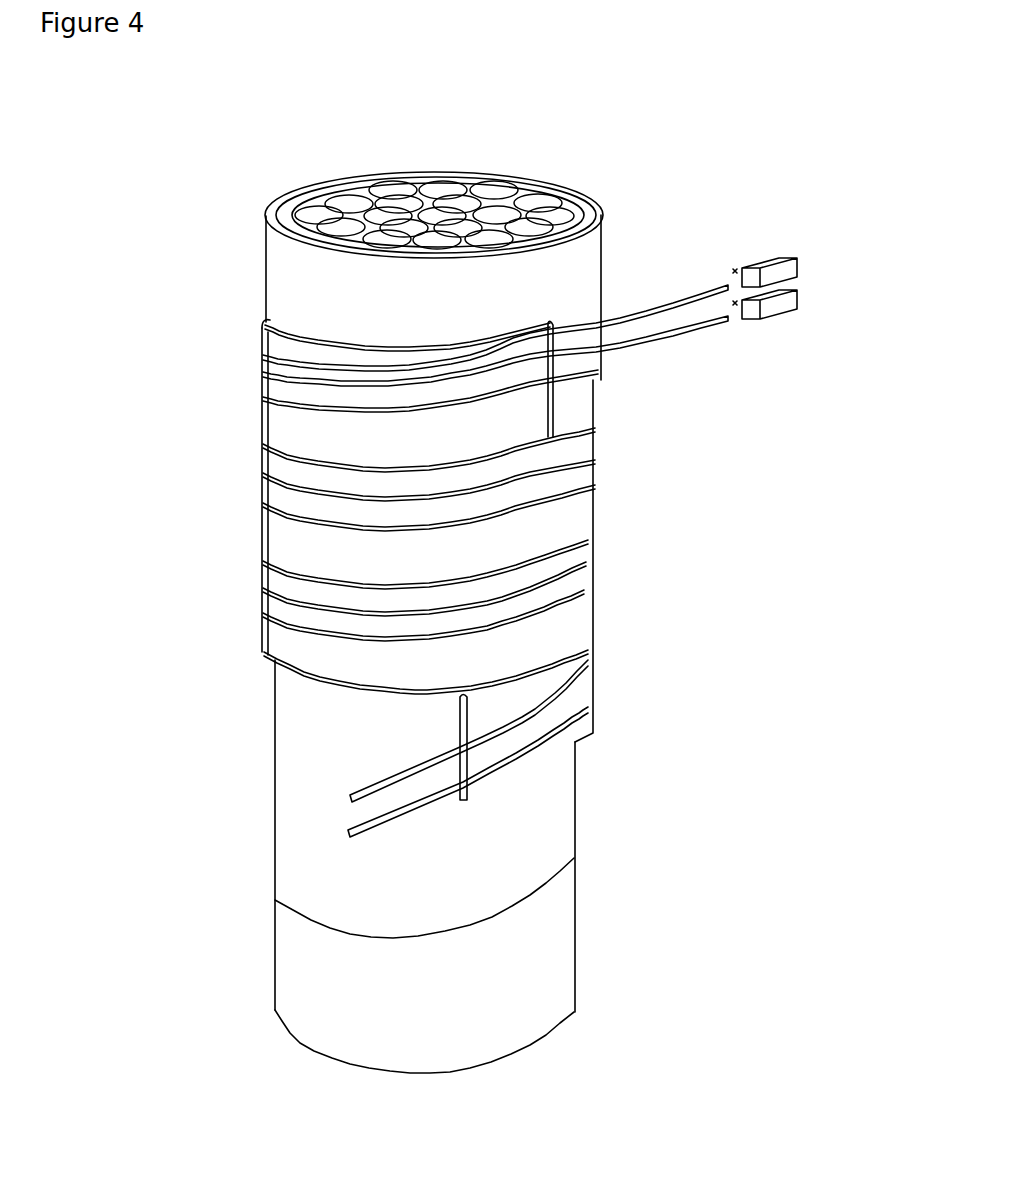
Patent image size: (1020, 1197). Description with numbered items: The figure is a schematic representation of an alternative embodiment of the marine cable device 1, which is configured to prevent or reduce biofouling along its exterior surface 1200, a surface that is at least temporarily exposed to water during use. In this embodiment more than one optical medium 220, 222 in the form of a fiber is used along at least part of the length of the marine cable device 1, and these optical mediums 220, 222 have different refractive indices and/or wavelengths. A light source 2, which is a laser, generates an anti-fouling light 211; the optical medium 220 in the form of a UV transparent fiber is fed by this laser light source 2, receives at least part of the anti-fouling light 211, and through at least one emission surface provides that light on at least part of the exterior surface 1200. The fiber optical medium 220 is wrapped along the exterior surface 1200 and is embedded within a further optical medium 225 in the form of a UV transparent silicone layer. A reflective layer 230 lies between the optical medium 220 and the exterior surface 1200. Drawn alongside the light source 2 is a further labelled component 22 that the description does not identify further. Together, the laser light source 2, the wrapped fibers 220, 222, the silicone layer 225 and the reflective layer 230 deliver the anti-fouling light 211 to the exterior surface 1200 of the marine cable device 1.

The marine cable device 1 is at (234, 141).
The exterior surface 1200 is at (267, 273).
The light source 2 is at (797, 292).
The connector 22 is at (797, 259).
The anti-fouling light 211 is at (733, 344).
The optical medium 220 is at (662, 343).
The optical medium 222 is at (652, 310).
The further optical medium 225 is at (590, 642).
The reflective layer 230 is at (543, 824).